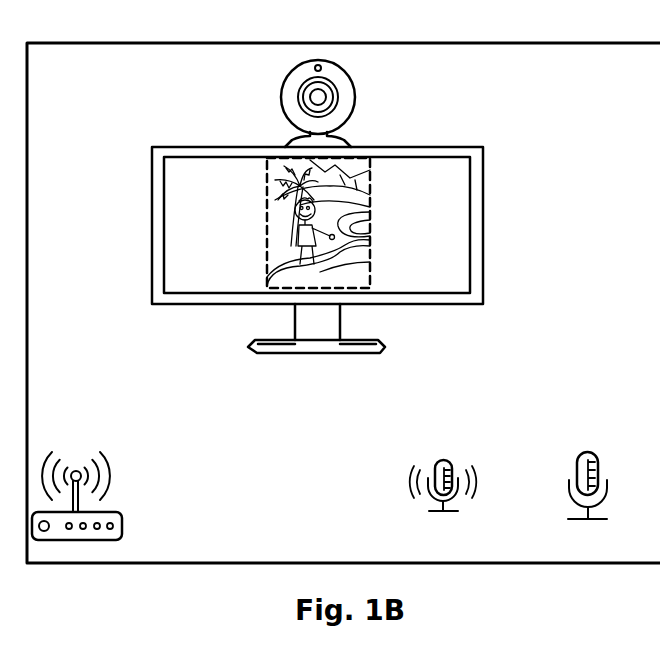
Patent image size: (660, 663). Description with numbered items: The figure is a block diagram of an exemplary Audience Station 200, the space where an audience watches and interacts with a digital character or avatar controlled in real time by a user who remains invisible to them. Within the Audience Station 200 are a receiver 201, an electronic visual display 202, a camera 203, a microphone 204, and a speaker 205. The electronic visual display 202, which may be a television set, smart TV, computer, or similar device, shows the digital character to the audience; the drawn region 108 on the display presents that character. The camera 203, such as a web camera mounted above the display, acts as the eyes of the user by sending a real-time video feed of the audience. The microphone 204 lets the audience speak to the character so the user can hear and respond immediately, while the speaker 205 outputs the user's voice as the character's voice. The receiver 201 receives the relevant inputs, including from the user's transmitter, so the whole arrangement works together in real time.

The Audience Station 200 is at (84, 42).
The video content region 108 is at (268, 222).
The receiver 201 is at (111, 474).
The electronic visual display 202 is at (483, 180).
The camera 203 is at (290, 75).
The microphone 204 is at (578, 455).
The speaker 205 is at (436, 462).